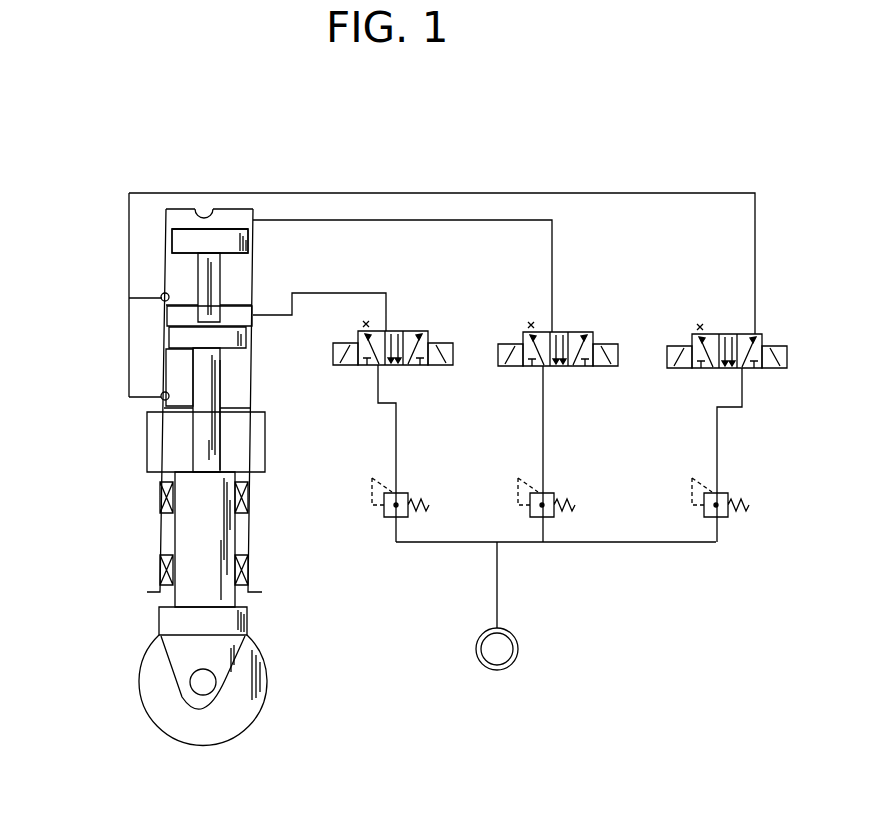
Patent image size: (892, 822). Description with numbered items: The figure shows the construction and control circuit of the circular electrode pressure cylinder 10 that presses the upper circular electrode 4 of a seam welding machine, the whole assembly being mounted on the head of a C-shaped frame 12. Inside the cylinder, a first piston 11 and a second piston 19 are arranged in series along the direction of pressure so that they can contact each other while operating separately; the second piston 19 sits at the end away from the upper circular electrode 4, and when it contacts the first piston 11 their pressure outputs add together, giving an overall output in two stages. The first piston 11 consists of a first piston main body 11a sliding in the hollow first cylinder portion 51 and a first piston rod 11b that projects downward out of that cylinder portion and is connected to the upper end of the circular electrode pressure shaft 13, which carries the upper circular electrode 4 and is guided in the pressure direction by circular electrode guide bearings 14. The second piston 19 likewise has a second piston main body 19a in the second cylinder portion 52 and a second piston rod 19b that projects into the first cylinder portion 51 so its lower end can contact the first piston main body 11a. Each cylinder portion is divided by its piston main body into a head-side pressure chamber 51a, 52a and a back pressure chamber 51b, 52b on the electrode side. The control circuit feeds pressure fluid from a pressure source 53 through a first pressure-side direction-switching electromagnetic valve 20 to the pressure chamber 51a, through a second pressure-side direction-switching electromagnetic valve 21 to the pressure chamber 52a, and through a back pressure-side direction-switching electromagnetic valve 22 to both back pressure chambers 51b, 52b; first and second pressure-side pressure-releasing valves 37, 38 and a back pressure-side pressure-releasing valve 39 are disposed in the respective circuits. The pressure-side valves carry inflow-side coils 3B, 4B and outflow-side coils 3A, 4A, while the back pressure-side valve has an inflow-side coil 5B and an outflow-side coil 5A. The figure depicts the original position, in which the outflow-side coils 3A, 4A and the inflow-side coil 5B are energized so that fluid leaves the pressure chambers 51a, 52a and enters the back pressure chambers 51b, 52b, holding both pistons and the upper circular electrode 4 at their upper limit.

The circular electrode pressure cylinder 10 is at (253, 273).
The pressure chamber of the second cylinder portion 52a is at (195, 209).
The second cylinder portion 52 is at (252, 258).
The second piston 19 is at (253, 237).
The second piston main body 19a is at (173, 240).
The second piston rod 19b is at (205, 275).
The back pressure chamber of the second cylinder portion 52b is at (165, 298).
The pressure chamber of the first cylinder portion 51a is at (173, 315).
The first cylinder portion 51 is at (252, 358).
The first piston 11 is at (173, 332).
The first piston main body 11a is at (168, 353).
The back pressure chamber of the first cylinder portion 51b is at (165, 397).
The first piston rod 11b is at (220, 390).
The C-shaped frame 12 is at (265, 452).
The circular electrode pressure shaft 13 is at (235, 535).
The circular electrode guide bearings 14 is at (248, 497).
The upper circular electrode 4 is at (263, 662).
The first pressure-side direction-switching electromagnetic valve 20 is at (403, 323).
The second pressure-side direction-switching electromagnetic valve 21 is at (568, 325).
The back pressure-side direction-switching electromagnetic valve 22 is at (723, 327).
The outflow-side coil 3A is at (339, 338).
The inflow-side coil 3B is at (448, 338).
The outflow-side coil 4A is at (504, 340).
The inflow-side coil 4B is at (614, 340).
The outflow-side coil 5A is at (672, 341).
The inflow-side coil 5B is at (783, 341).
The first pressure-side pressure-releasing valve 37 is at (400, 494).
The second pressure-side pressure-releasing valve 38 is at (546, 494).
The back pressure-side pressure-releasing valve 39 is at (720, 494).
The pressure source 53 is at (477, 658).